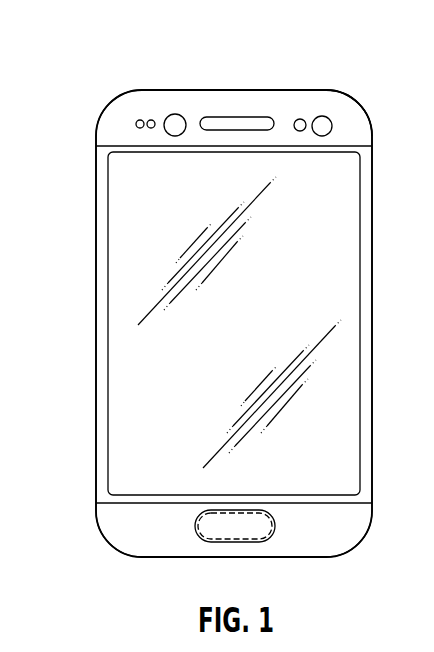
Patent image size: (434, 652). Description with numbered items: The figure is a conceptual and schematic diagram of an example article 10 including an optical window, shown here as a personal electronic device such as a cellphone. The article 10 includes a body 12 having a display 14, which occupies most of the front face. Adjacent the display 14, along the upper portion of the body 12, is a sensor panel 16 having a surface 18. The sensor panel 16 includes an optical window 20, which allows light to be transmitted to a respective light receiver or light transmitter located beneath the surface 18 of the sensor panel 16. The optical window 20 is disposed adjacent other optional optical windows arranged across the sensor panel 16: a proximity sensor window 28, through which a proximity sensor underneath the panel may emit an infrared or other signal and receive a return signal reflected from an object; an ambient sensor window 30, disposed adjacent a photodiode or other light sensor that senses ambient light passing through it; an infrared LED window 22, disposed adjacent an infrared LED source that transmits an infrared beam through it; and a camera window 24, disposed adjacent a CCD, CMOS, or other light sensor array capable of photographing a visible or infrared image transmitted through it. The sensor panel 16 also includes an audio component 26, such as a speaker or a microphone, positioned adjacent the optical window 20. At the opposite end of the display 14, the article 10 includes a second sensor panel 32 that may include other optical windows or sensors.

The article 10 is at (89, 38).
The body 12 is at (96, 222).
The display 14 is at (124, 297).
The sensor panel 16 is at (340, 92).
The surface 18 is at (350, 127).
The optical window 20 is at (176, 114).
The infrared LED window 22 is at (298, 119).
The camera window 24 is at (323, 115).
The audio component 26 is at (225, 116).
The proximity sensor window 28 is at (135, 122).
The ambient sensor window 30 is at (148, 119).
The second sensor panel 32 is at (100, 530).